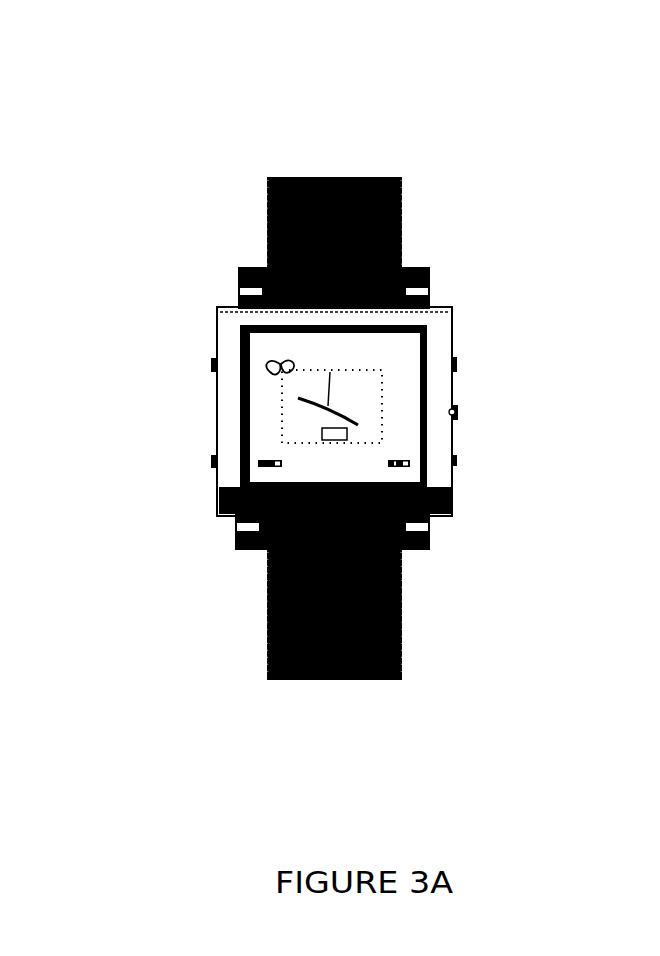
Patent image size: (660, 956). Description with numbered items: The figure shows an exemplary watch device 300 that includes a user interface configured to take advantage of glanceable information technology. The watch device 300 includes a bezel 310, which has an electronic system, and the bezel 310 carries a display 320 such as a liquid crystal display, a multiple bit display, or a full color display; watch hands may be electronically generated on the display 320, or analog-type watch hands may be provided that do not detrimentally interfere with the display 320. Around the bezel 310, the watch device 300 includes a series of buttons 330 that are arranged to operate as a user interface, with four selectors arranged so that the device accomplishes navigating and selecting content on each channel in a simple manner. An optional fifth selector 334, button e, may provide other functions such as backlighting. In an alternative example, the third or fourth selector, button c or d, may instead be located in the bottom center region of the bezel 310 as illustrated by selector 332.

The watch device 300 is at (366, 66).
The bezel 310 is at (462, 285).
The display 320 is at (405, 350).
The buttons 330 is at (474, 365).
The selector 332 is at (217, 510).
The fifth selector 334 is at (193, 365).